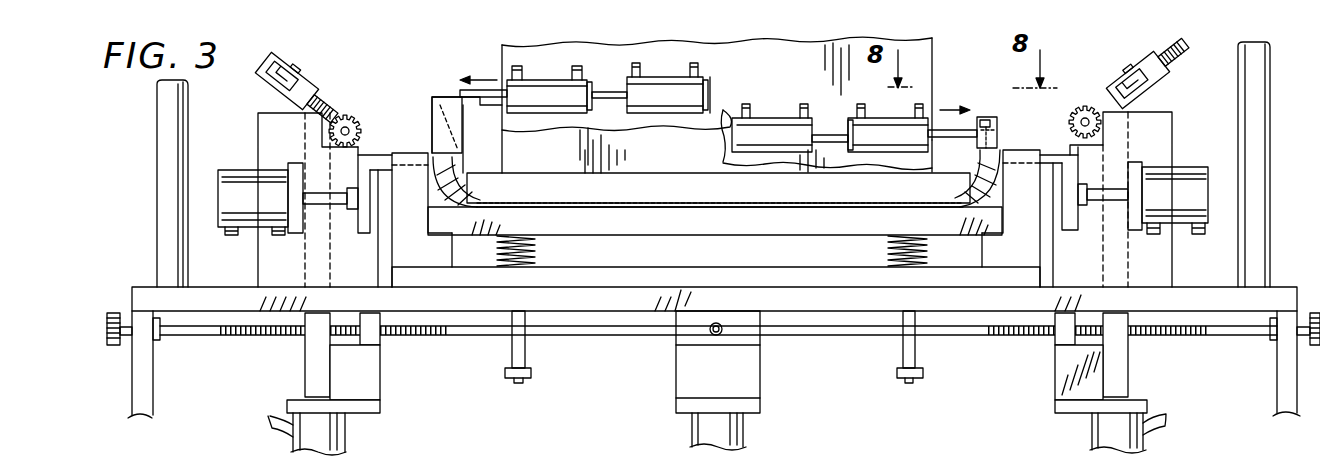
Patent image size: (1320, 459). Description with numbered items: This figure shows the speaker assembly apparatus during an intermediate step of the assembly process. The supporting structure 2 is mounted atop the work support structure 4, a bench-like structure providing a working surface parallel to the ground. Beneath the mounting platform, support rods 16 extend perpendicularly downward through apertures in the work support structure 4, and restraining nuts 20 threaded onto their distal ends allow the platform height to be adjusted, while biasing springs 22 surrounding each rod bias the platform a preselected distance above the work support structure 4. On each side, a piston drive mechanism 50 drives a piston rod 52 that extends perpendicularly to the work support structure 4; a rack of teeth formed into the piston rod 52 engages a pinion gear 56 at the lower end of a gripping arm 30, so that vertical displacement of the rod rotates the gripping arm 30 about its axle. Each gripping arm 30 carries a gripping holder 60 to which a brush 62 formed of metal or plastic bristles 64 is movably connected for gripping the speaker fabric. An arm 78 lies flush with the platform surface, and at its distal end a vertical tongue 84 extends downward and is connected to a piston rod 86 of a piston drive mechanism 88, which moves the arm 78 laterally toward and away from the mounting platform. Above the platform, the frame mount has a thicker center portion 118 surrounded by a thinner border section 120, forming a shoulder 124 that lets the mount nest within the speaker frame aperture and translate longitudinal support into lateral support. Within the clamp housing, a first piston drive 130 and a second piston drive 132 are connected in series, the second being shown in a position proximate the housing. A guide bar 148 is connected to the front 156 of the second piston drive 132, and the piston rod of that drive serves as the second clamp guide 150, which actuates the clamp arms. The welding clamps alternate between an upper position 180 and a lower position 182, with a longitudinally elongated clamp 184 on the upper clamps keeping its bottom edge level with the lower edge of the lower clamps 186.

The supporting structure 2 is at (157, 116).
The work support structure 4 is at (140, 287).
The support rods 16 is at (525, 333).
The restraining nuts 20 is at (532, 372).
The biasing springs 22 is at (535, 248).
The gripping arm 30 is at (713, 79).
The piston drive mechanism 50 is at (292, 437).
The piston rod 52 is at (305, 356).
The pinion gear 56 is at (357, 106).
The gripping holder 60 is at (1137, 79).
The brush 62 is at (1132, 84).
The bristles 64 is at (1128, 68).
The arm 78 is at (372, 158).
The vertical tongue 84 is at (357, 227).
The piston rod 86 is at (317, 207).
The piston drive mechanism 88 is at (218, 217).
The center portion 118 is at (650, 193).
The border section 120 is at (968, 205).
The shoulder 124 is at (478, 205).
The first piston drive 130 is at (663, 97).
The second piston drive 132 is at (548, 97).
The guide bar 148 is at (1011, 104).
The second clamp guide 150 is at (942, 128).
The front of the second piston drive 156 is at (938, 140).
The upper position 180 is at (437, 91).
The lower position 182 is at (1000, 120).
The longitudinally elongated clamp 184 is at (428, 123).
The lower clamps 186 is at (998, 137).